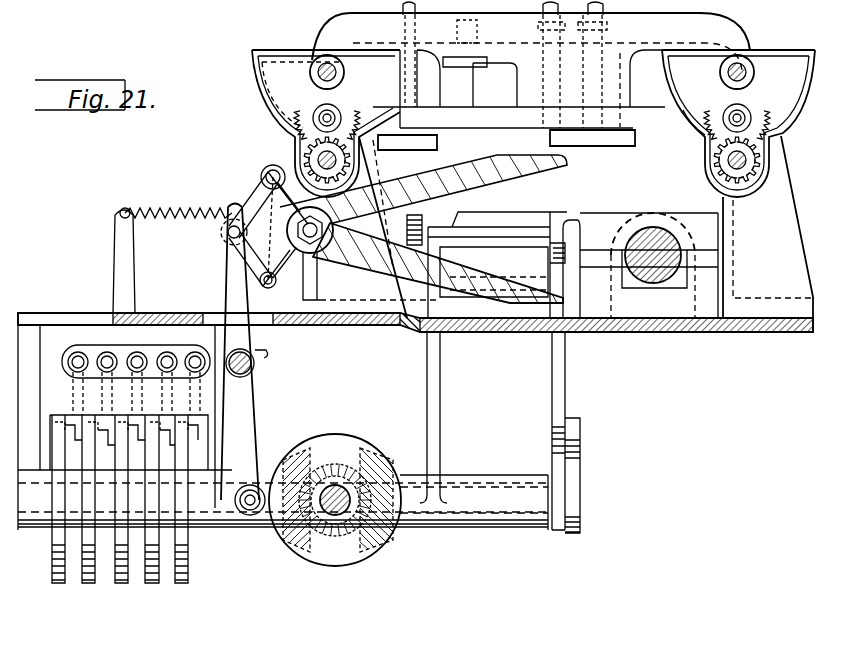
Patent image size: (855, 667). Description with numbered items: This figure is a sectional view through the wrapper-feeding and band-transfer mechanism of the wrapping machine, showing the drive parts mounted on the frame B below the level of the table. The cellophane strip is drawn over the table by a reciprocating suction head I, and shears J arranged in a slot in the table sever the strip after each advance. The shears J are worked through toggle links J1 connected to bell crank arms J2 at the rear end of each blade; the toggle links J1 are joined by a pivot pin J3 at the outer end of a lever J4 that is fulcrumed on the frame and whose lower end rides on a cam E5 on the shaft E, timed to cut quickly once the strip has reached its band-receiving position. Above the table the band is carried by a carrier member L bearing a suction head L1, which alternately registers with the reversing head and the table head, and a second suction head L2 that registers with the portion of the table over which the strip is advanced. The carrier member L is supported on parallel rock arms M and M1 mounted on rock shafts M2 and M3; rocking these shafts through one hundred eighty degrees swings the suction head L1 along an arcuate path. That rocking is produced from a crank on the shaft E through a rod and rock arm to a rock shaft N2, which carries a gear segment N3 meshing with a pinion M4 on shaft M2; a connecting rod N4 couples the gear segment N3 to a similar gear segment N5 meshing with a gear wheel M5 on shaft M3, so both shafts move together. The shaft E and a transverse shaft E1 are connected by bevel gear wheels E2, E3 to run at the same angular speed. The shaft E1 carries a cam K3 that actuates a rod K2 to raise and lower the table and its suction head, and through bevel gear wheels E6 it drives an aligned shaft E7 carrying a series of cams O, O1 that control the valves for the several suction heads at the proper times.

The carrier member L is at (358, 28).
The suction head L1 is at (437, 143).
The suction head L2 is at (612, 142).
The rock arm M is at (346, 76).
The rock arm M1 is at (757, 90).
The rock shaft M2 is at (337, 162).
The rock shaft M3 is at (733, 162).
The pinion M4 is at (296, 160).
The gear wheel M5 is at (750, 175).
The rock shaft N2 is at (318, 74).
The gear segment N3 is at (313, 112).
The connecting rod N4 is at (660, 122).
The gear segment N5 is at (772, 115).
The reciprocating suction head I is at (510, 210).
The shears J is at (538, 175).
The toggle links J1 is at (257, 258).
The bell crank arms J2 is at (268, 230).
The pivot pin J3 is at (221, 238).
The lever J4 is at (253, 392).
The frame B is at (60, 313).
The shaft E is at (340, 517).
The shaft E1 is at (470, 510).
The bevel gear wheel E2 is at (352, 436).
The bevel gear wheel E3 is at (388, 548).
The cam E5 is at (374, 447).
The bevel gear wheels E6 is at (306, 440).
The shaft E7 is at (232, 512).
The rod K2 is at (562, 397).
The cam K3 is at (573, 533).
The cam O is at (60, 584).
The cam O1 is at (91, 584).